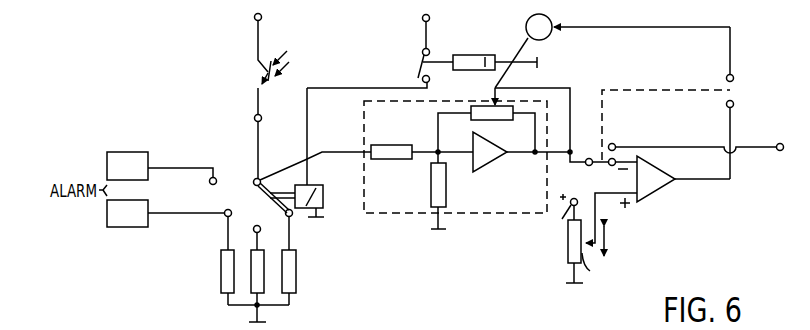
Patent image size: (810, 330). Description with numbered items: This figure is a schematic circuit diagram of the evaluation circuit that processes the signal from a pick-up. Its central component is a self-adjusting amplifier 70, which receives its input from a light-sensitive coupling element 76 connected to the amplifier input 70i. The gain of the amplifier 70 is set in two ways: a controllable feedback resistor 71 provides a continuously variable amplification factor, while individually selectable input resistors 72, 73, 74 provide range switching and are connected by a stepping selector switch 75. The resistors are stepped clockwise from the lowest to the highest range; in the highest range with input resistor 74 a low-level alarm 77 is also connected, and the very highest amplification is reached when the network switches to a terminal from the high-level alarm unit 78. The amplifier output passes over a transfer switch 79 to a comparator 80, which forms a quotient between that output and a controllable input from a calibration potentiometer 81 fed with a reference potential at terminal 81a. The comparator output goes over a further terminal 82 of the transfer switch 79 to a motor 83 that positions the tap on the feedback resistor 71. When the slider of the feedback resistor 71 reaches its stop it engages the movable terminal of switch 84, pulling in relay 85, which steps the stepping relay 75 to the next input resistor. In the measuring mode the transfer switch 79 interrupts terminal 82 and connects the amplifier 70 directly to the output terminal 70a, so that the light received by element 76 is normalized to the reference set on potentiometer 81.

The self-adjusting amplifier 70 is at (472, 215).
The amplifier input 70i is at (262, 116).
The output terminal 70a is at (780, 151).
The controllable feedback resistor 71 is at (496, 114).
The input resistor 72 is at (291, 262).
The input resistor 73 is at (262, 280).
The input resistor 74 is at (220, 276).
The stepping selector switch 75 is at (318, 197).
The light-sensitive coupling element 76 is at (262, 72).
The low-level alarm 77 is at (122, 218).
The high-level alarm unit 78 is at (118, 168).
The transfer switch 79 is at (588, 158).
The comparator 80 is at (647, 190).
The calibration potentiometer 81 is at (577, 250).
The terminal 81a is at (577, 200).
The terminal 82 is at (735, 92).
The motor 83 is at (551, 36).
The switch 84 is at (472, 63).
The contact terminal 85 is at (421, 62).